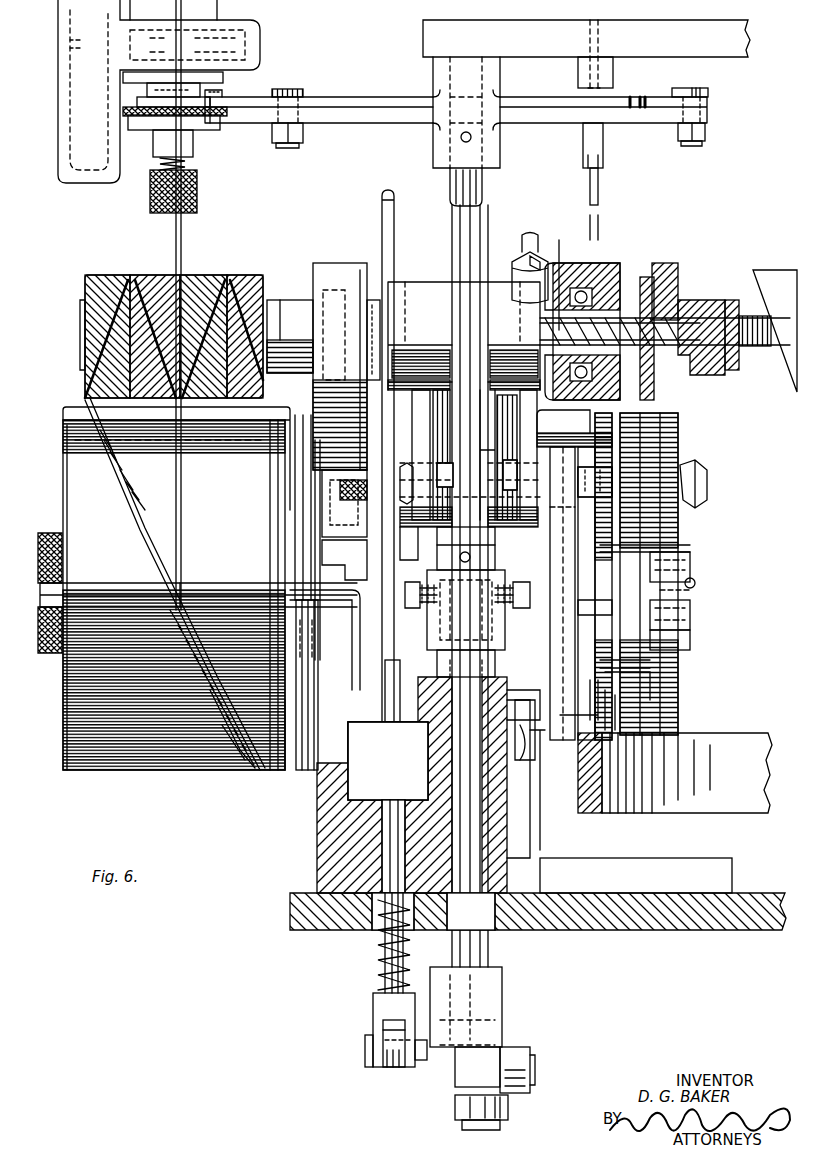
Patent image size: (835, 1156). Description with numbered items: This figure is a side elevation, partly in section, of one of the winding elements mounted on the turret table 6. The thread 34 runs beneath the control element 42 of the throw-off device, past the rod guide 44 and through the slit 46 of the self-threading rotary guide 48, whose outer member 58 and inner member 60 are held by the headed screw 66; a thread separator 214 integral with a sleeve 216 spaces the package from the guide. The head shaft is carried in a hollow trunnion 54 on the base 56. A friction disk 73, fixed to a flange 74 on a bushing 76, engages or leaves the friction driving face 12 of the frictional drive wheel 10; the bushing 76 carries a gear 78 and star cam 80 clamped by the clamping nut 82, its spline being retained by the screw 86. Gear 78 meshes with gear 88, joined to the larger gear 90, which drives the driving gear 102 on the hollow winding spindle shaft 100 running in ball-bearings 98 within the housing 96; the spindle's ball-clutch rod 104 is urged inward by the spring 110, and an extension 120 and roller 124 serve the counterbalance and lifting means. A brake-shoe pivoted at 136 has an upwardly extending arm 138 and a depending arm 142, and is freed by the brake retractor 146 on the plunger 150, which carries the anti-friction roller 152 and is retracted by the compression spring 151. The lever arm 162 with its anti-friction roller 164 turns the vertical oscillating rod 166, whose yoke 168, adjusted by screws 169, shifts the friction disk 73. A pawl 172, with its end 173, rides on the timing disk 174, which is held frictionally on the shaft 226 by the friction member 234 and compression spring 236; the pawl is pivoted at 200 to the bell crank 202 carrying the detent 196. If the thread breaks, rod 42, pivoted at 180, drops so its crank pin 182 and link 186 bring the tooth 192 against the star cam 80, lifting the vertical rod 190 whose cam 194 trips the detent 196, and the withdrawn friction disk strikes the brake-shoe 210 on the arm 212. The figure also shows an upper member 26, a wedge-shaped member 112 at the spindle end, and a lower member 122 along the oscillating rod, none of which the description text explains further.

The turret table 6 is at (305, 925).
The frictional drive wheel 10 is at (730, 745).
The friction driving face 12 is at (578, 770).
The top plate 26 is at (748, 40).
The thread 34 is at (183, 250).
The control element 42 is at (100, 590).
The rod guide 44 is at (125, 585).
The thread guide slot 46 is at (230, 745).
The self-threading rotary guide 48 is at (147, 770).
The hollow trunnion 54 is at (372, 620).
The base 56 is at (317, 850).
The outer member 58 is at (95, 770).
The inner member 60 is at (270, 772).
The headed screw 66 is at (40, 655).
The friction disk 73 is at (620, 538).
The flange 74 is at (600, 707).
The bushing 76 is at (690, 568).
The gear 78 is at (640, 682).
The star cam 80 is at (640, 660).
The clamping nut 82 is at (670, 645).
The screw 86 is at (695, 583).
The gear 88 is at (640, 425).
The gear 90 is at (668, 458).
The housing 96 is at (420, 287).
The ball-bearings 98 is at (600, 290).
The hollow winding spindle shaft 100 is at (283, 318).
The driving gear 102 is at (662, 262).
The rod 104 is at (700, 330).
The spring 110 is at (559, 330).
The wedge 112 is at (770, 265).
The extension 120 is at (530, 235).
The main shaft 122 is at (488, 955).
The roller 124 is at (520, 1052).
The pivot 136 is at (370, 318).
The upwardly extending arm 138 is at (380, 243).
The depending arm 142 is at (370, 372).
The brake retractor 146 is at (395, 545).
The plunger 150 is at (385, 943).
The compression spring 151 is at (380, 975).
The anti-friction roller 152 is at (395, 1072).
The lever arm 162 is at (470, 1030).
The anti-friction roller 164 is at (455, 1110).
The vertical oscillating rod 166 is at (453, 188).
The yoke 168 is at (527, 560).
The screws 169 is at (405, 595).
The pawl 172 is at (247, 104).
The end of the pawl 173 is at (492, 112).
The timing disk 174 is at (222, 96).
The pivot 180 is at (360, 725).
The crank pin 182 is at (600, 720).
The link 186 is at (650, 690).
The vertical rod 190 is at (600, 184).
The tooth 192 is at (690, 600).
The cam 194 is at (605, 150).
The detent 196 is at (708, 100).
The pivot 200 is at (288, 148).
The bell crank 202 is at (358, 120).
The brake-shoe 210 is at (545, 745).
The arm 212 is at (525, 735).
The thread separator 214 is at (70, 412).
The sleeve 216 is at (298, 750).
The shaft 226 is at (150, 172).
The friction member 234 is at (204, 126).
The compression spring 236 is at (186, 162).